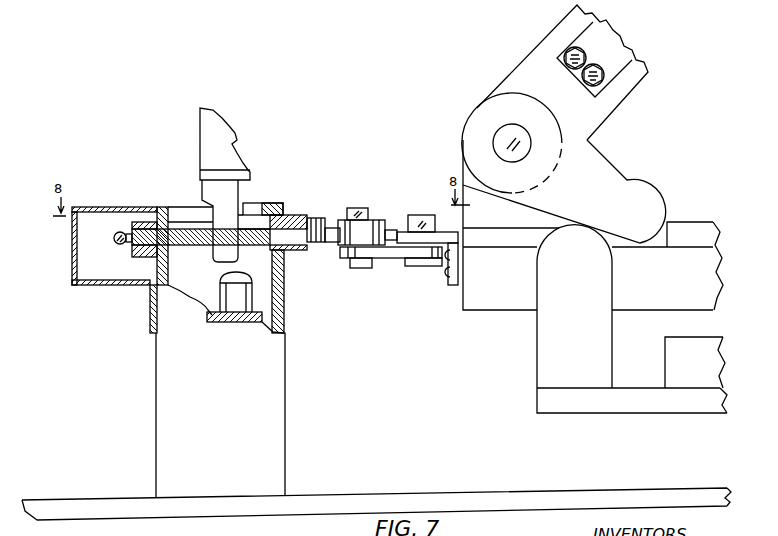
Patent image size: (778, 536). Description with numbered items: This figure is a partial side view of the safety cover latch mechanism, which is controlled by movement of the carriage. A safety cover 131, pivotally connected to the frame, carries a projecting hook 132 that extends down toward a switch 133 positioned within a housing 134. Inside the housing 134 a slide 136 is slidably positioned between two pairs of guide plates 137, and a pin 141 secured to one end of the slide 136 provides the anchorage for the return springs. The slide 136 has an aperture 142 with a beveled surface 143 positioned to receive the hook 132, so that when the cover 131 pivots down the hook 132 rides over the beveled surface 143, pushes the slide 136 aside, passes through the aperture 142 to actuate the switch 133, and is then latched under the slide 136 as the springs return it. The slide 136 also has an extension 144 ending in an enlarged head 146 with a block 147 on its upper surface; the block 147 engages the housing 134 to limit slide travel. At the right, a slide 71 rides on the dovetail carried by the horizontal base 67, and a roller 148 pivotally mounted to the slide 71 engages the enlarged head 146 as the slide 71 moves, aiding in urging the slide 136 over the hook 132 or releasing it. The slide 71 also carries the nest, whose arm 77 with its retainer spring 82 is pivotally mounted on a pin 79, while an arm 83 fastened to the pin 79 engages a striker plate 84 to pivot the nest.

The safety cover 131 is at (205, 138).
The projecting hook 132 is at (207, 187).
The switch 133 is at (213, 306).
The housing 134 is at (284, 297).
The slide 136 is at (181, 247).
The guide plates 137 is at (132, 225).
The pin 141 is at (114, 238).
The aperture 142 is at (270, 234).
The beveled surface 143 is at (207, 223).
The extension 144 is at (332, 243).
The enlarged head 146 is at (437, 229).
The block 147 is at (338, 212).
The roller 148 is at (373, 226).
The arm 77 is at (533, 55).
The retainer spring 82 is at (580, 72).
The pin 79 is at (500, 145).
The arm 83 is at (603, 163).
The striker plate 84 is at (540, 323).
The slide 71 is at (652, 300).
The horizontal base 67 is at (667, 354).